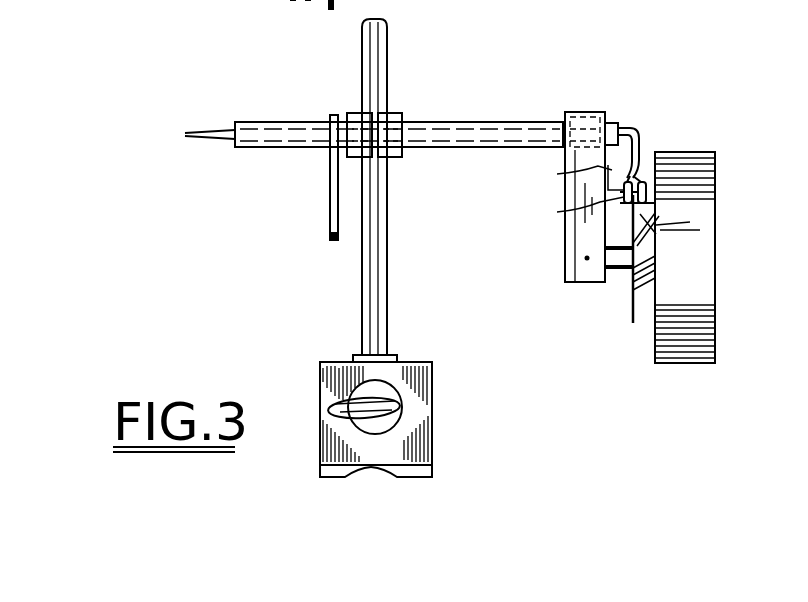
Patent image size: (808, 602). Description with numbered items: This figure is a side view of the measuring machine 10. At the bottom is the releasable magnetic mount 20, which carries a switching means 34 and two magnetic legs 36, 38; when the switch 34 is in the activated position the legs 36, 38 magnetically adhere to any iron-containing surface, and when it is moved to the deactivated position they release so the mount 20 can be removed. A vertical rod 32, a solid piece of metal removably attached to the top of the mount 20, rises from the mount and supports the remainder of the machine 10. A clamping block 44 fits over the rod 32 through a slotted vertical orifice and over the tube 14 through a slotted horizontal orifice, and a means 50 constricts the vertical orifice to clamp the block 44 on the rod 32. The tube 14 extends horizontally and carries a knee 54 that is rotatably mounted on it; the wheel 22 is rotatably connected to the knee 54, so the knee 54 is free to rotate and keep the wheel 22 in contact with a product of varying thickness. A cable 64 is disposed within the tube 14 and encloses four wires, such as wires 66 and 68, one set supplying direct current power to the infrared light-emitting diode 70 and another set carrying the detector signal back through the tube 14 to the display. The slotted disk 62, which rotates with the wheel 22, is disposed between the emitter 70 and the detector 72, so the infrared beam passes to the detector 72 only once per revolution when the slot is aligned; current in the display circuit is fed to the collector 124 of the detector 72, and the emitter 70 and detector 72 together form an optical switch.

The measuring machine 10 is at (645, 80).
The tube 14 is at (512, 84).
The releasable magnetic mount 20 is at (432, 396).
The wheel 22 is at (708, 293).
The vertical rod 32 is at (388, 281).
The switching means 34 is at (338, 398).
The magnetic leg 36 is at (340, 478).
The magnetic leg 38 is at (415, 478).
The clamping block 44 is at (395, 116).
The means for constricting slotted vertical orifice 50 is at (330, 226).
The knee 54 is at (589, 112).
The slotted disk 62 is at (632, 302).
The cable 64 is at (634, 136).
The wire 66 is at (569, 175).
The wire 68 is at (640, 180).
The infrared light-emitting diode 70 is at (656, 201).
The detector 72 is at (575, 210).
The collector 124 is at (656, 228).